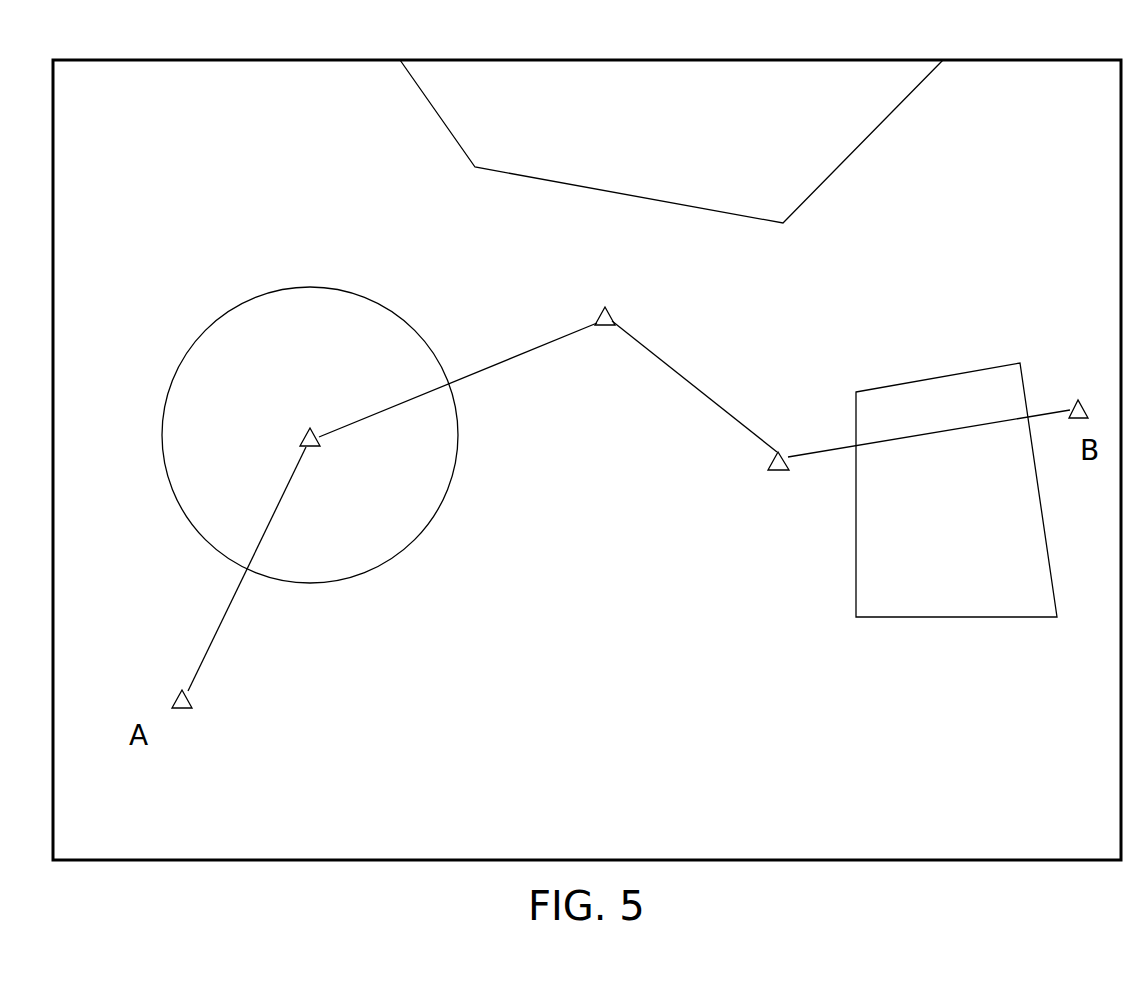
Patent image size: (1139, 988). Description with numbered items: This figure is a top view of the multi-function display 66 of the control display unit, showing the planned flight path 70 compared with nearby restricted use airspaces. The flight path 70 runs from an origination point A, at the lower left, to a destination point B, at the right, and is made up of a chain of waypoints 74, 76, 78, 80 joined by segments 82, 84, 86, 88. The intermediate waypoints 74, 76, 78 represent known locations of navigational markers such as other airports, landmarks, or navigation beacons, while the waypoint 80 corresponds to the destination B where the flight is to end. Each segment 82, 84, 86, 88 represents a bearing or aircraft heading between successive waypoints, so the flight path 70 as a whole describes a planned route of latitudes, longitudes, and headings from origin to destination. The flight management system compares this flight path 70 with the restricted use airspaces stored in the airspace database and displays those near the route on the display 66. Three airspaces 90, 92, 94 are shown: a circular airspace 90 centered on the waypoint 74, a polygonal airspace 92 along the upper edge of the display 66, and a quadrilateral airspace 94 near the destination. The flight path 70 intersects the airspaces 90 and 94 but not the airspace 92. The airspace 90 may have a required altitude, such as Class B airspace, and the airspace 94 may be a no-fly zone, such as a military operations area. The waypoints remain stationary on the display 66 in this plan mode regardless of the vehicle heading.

The multi-function display 66 is at (131, 58).
The flight path 70 is at (238, 243).
The waypoint 74 is at (320, 448).
The waypoint 76 is at (603, 305).
The waypoint 78 is at (775, 473).
The waypoint 80 is at (1077, 398).
The segment 82 is at (214, 627).
The segment 84 is at (497, 360).
The segment 86 is at (679, 383).
The segment 88 is at (820, 450).
The airspace 90 is at (192, 337).
The airspace 92 is at (452, 141).
The airspace 94 is at (950, 618).